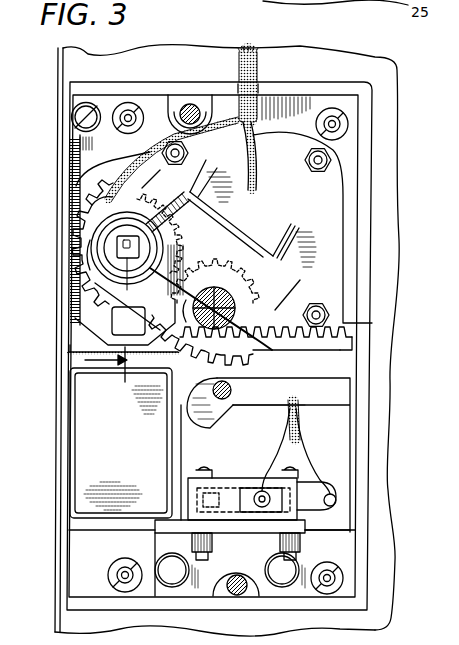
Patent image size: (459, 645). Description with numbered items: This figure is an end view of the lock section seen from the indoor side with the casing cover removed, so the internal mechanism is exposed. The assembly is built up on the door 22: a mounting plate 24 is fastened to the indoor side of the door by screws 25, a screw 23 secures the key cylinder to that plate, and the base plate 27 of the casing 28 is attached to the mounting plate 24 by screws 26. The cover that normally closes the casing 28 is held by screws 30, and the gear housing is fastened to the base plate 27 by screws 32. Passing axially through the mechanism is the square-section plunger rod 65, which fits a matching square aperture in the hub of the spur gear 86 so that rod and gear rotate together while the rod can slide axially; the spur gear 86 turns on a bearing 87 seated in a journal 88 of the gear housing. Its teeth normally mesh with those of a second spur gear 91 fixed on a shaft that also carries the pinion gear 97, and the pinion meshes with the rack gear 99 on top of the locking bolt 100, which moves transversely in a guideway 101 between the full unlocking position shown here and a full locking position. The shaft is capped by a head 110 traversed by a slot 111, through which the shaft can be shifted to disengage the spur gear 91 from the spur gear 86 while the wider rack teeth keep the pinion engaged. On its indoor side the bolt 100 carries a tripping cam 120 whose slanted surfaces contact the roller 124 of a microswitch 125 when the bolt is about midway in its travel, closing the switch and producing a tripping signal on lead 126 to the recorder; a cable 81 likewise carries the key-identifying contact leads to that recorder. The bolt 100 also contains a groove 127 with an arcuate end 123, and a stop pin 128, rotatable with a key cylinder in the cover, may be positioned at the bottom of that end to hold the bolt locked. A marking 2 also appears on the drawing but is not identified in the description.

The timer mechanism 2 is at (80, 148).
The door 22 is at (389, 190).
The screw 23 is at (76, 200).
The mounting plate 24 is at (78, 212).
The screws 25 is at (71, 115).
The screws 26 is at (140, 108).
The base plate 27 is at (76, 170).
The casing 28 is at (63, 256).
The screws 30 is at (196, 103).
The screws 32 is at (145, 157).
The plunger rod 65 is at (73, 297).
The cable 81 is at (206, 139).
The spur gear 86 is at (75, 318).
The bearing 87 is at (150, 240).
The journal 88 is at (118, 258).
The spur gear 91 is at (251, 352).
The pinion gear 97 is at (183, 315).
The rack gear 99 is at (372, 325).
The locking bolt 100 is at (85, 432).
The guideway 101 is at (63, 357).
The head 110 is at (215, 294).
The slot 111 is at (229, 235).
The tripping cam 120 is at (317, 466).
The arcuate end 123 is at (202, 429).
The roller 124 is at (186, 492).
The microswitch 125 is at (233, 478).
The lead 126 is at (286, 451).
The groove 127 is at (293, 388).
The stop pin 128 is at (222, 399).